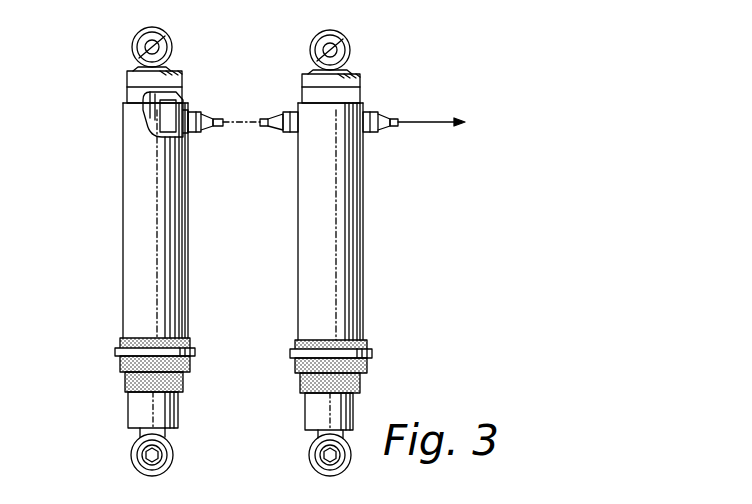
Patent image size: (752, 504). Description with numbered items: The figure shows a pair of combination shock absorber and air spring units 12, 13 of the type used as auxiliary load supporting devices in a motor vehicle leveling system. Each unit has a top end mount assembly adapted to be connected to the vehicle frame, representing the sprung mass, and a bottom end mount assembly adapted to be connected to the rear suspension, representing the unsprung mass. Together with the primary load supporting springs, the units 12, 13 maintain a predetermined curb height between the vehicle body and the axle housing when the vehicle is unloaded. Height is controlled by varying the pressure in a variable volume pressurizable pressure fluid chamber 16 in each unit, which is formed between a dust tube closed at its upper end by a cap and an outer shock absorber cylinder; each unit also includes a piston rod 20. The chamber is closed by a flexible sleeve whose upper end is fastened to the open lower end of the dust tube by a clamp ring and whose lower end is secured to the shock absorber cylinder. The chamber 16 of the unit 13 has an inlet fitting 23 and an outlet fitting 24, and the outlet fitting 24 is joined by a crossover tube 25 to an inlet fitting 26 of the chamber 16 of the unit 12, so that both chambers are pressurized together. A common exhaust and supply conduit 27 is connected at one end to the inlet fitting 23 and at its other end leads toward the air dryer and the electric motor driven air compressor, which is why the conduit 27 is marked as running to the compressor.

The combination shock absorber and air spring unit 12 is at (118, 268).
The combination shock absorber and air spring unit 13 is at (368, 257).
The variable volume pressurizable pressure fluid chamber 16 is at (172, 125).
The piston rod 20 is at (150, 105).
The inlet fitting 23 is at (378, 130).
The outlet fitting 24 is at (283, 132).
The crossover tube 25 is at (262, 127).
The inlet fitting 26 is at (200, 116).
The common exhaust and supply conduit 27 is at (396, 118).